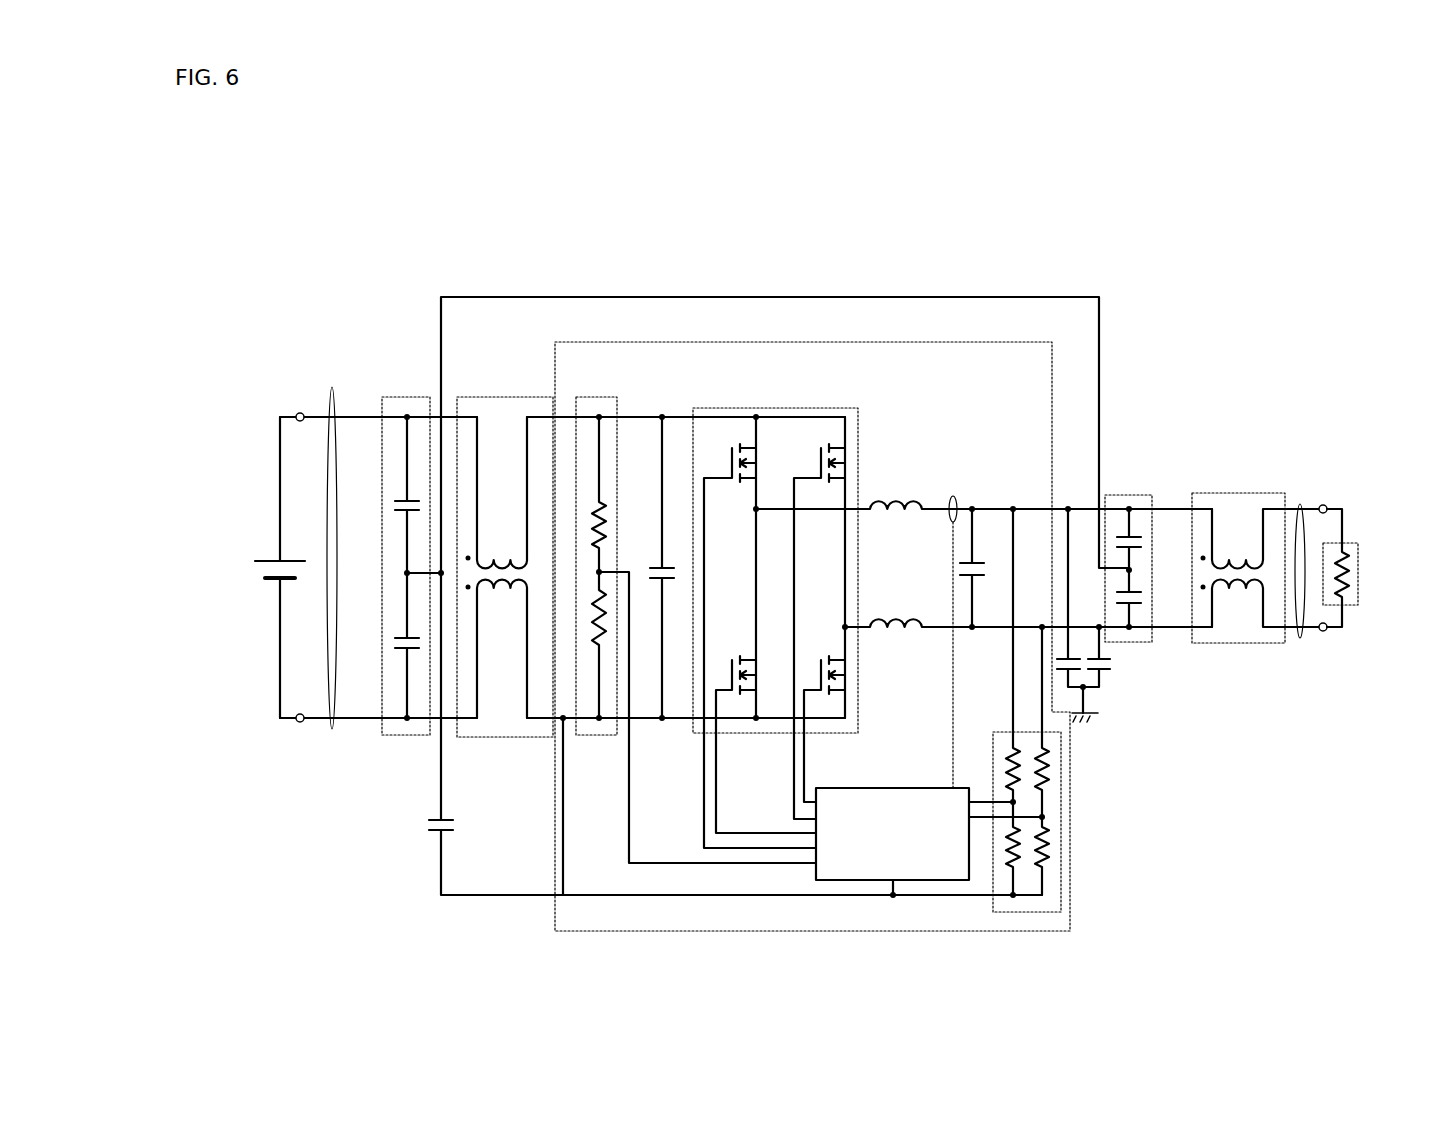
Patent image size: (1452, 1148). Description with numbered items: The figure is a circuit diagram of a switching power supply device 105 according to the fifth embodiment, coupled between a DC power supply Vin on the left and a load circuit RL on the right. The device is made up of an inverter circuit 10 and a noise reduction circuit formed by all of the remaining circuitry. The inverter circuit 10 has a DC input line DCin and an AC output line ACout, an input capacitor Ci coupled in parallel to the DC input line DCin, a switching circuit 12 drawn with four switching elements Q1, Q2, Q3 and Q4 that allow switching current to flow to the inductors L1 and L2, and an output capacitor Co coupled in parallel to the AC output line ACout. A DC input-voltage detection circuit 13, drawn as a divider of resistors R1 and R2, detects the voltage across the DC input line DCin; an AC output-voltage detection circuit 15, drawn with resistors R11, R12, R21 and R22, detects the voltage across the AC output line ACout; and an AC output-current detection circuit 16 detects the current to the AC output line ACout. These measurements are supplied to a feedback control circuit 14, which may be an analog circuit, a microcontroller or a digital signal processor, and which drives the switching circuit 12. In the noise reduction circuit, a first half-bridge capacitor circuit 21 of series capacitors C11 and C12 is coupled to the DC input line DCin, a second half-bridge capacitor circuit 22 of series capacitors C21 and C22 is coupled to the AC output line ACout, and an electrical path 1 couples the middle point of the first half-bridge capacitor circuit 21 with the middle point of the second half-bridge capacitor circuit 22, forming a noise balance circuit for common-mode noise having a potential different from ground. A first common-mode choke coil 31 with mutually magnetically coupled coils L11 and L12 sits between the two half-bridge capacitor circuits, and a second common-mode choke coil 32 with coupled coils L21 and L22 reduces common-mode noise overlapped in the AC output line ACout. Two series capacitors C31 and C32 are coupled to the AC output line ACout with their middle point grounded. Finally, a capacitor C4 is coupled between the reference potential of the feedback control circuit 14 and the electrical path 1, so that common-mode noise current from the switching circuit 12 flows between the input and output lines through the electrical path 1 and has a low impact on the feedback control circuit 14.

The switching power supply device 105 is at (398, 276).
The electrical path 1 is at (753, 295).
The inverter circuit 10 is at (834, 341).
The first half-bridge capacitor circuit 21 is at (407, 396).
The first common-mode choke coil 31 is at (502, 396).
The DC input-voltage detection circuit 13 is at (592, 396).
The switching circuit 12 is at (778, 407).
The feedback control circuit 14 is at (885, 788).
The AC output-voltage detection circuit 15 is at (1062, 816).
The AC output-current detection circuit 16 is at (953, 496).
The second half-bridge capacitor circuit 22 is at (1130, 495).
The second common-mode choke coil 32 is at (1238, 493).
The DC power supply Vin is at (357, 567).
The DC input line DCin is at (336, 382).
The AC output line ACout is at (1300, 505).
The capacitor C11 is at (384, 493).
The capacitor C12 is at (397, 645).
The coil L11 is at (497, 492).
The coil L12 is at (497, 649).
The divider resistor R1 is at (584, 493).
The divider resistor R2 is at (689, 716).
The input capacitor Ci is at (656, 567).
The switching element Q1 is at (764, 732).
The switching element Q2 is at (821, 716).
The switching element Q3 is at (757, 643).
The switching element Q4 is at (812, 628).
The inductor L1 is at (984, 492).
The inductor L2 is at (1028, 610).
The output capacitor Co is at (983, 568).
The capacitor C21 is at (1150, 538).
The capacitor C22 is at (1150, 598).
The capacitor C31 is at (1078, 676).
The capacitor C32 is at (1113, 673).
The capacitor C4 is at (424, 828).
The coil L21 is at (1260, 539).
The coil L22 is at (1260, 604).
The feedback resistor R11 is at (1004, 758).
The feedback resistor R12 is at (1004, 868).
The feedback resistor R21 is at (1050, 768).
The feedback resistor R22 is at (1050, 850).
The load circuit RL is at (1355, 568).